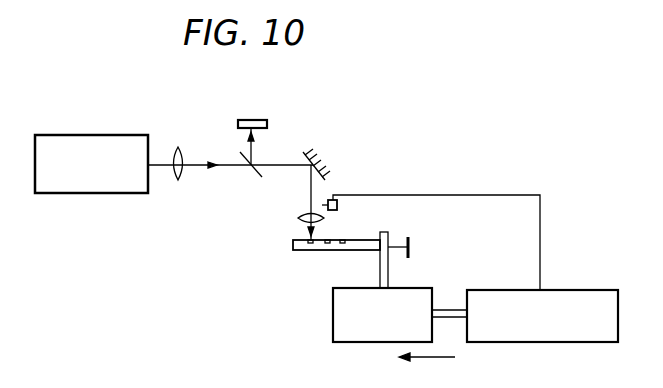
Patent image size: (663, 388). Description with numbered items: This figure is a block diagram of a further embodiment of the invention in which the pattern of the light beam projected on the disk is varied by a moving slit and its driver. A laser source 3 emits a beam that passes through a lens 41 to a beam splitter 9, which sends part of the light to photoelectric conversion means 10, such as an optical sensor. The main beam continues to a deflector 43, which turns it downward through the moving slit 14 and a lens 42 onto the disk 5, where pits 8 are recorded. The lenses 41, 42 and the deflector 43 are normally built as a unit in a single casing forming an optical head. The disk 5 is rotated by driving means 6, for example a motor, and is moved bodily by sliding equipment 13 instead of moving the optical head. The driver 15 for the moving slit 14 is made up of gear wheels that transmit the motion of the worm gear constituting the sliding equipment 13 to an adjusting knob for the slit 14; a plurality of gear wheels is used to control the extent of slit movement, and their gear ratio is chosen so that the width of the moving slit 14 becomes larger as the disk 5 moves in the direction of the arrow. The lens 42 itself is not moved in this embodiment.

The laser source 3 is at (83, 135).
The lens 41 is at (182, 150).
The beam splitter 9 is at (259, 174).
The photoelectric conversion means 10 is at (246, 120).
The deflector 43 is at (315, 152).
The moving slit 14 is at (306, 211).
The lens 42 is at (300, 219).
The driver 15 is at (337, 206).
The disk 5 is at (294, 252).
The pit 8 is at (311, 252).
The means for driving the disk 6 is at (381, 344).
The sliding equipment 13 is at (560, 344).